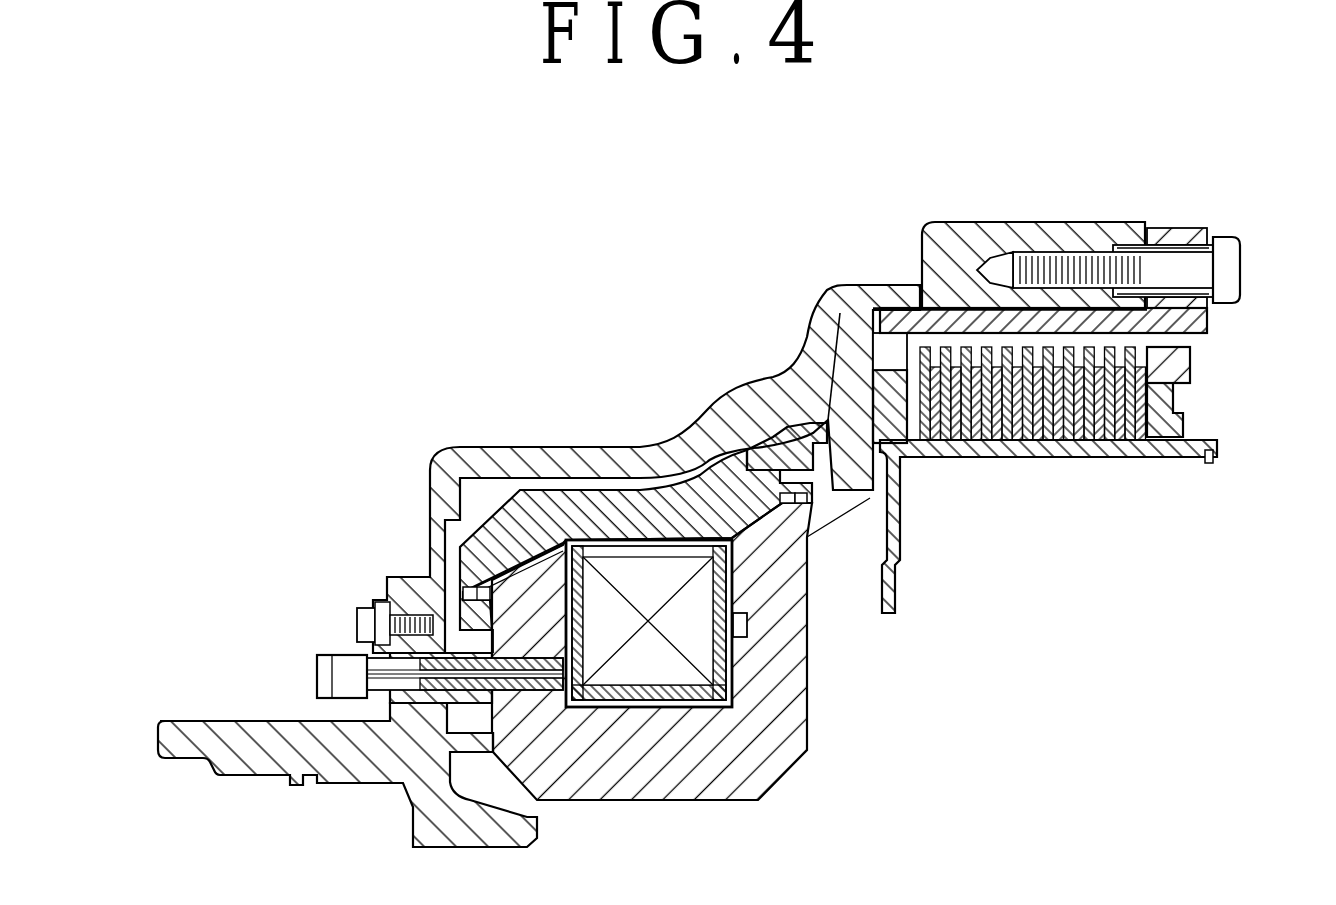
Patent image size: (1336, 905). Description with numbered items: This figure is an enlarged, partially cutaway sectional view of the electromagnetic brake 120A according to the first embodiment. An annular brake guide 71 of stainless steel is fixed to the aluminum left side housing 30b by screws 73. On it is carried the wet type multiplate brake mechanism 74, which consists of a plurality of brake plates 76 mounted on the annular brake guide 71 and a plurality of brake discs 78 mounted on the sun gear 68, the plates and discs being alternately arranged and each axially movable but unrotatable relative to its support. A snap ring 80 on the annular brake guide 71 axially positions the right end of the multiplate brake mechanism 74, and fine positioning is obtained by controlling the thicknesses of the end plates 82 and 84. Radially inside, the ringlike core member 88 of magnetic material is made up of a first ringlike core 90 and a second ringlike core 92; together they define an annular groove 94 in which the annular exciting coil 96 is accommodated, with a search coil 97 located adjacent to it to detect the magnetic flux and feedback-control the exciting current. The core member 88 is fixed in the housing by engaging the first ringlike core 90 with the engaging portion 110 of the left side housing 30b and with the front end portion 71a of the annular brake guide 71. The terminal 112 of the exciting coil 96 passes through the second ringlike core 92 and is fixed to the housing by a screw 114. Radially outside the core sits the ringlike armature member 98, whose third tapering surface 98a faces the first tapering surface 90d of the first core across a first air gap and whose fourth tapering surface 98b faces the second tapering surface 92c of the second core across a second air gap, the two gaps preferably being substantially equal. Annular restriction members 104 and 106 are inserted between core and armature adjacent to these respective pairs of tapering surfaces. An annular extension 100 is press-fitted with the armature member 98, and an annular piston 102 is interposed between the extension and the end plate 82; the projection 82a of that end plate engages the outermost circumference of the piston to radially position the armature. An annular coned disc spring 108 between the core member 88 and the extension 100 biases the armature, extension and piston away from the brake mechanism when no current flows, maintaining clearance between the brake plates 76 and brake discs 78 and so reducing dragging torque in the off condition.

The left side housing 30b is at (800, 340).
The sun gear 68 is at (900, 580).
The annular brake guide 71 is at (818, 330).
The front end portion of the annular brake guide 71a is at (856, 475).
The screw 73 is at (1240, 270).
The wet type multiplate brake mechanism 74 is at (953, 343).
The brake plate 76 is at (1090, 343).
The brake disc 78 is at (1138, 450).
The snap ring 80 is at (1192, 352).
The end plate 82 is at (925, 450).
The projection 82a is at (888, 355).
The end plate 84 is at (1177, 400).
The ringlike core member 88 is at (716, 804).
The first ringlike core 90 is at (780, 772).
The first tapering surface 90d is at (703, 470).
The second ringlike core 92 is at (600, 603).
The second tapering surface 92c is at (437, 462).
The annular groove 94 is at (647, 712).
The exciting coil 96 is at (697, 643).
The search coil 97 is at (748, 626).
The ringlike armature member 98 is at (575, 498).
The third tapering surface 98a is at (808, 578).
The fourth tapering surface 98b is at (607, 620).
The annular extension 100 is at (752, 413).
The annular piston 102 is at (893, 462).
The annular restriction member 104 is at (740, 450).
The annular restriction member 106 is at (458, 592).
The annular coned disc spring 108 is at (773, 442).
The engaging portion of the left side housing 110 is at (468, 748).
The terminal 112 is at (322, 672).
The screw 114 is at (360, 625).
The electromagnetic brake 120A is at (495, 447).